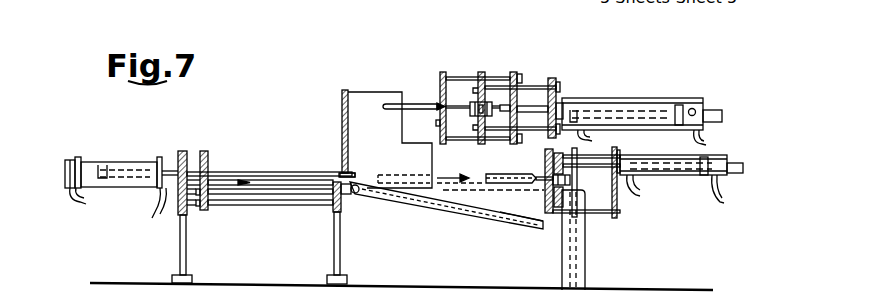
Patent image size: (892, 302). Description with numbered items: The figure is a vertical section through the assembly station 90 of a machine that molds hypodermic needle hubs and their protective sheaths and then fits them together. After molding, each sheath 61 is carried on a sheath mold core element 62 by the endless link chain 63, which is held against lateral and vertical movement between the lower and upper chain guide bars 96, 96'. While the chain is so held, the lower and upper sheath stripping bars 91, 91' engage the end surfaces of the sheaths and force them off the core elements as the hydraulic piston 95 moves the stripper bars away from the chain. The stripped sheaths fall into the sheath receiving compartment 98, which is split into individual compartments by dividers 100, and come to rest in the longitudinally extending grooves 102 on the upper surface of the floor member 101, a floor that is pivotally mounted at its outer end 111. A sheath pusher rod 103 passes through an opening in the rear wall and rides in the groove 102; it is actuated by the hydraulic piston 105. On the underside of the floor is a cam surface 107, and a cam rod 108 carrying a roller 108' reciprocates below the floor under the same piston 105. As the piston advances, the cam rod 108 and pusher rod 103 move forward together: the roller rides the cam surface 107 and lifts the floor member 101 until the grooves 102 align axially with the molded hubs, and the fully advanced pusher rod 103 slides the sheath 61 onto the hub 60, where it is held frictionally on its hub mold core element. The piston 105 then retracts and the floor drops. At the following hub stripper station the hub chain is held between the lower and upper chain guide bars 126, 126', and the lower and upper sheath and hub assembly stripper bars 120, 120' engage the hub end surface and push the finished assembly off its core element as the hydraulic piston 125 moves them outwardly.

The hub 60 is at (548, 177).
The hypodermic needle protective sheath 61 is at (412, 102).
The sheath mold core element 62 is at (446, 106).
The endless link chain 63 is at (474, 115).
The assembly station 90 is at (352, 88).
The lower sheath stripping bar 91 is at (422, 128).
The upper sheath stripping bar 91' is at (456, 86).
The hydraulic piston 95 is at (643, 105).
The lower chain guide bar 96 is at (479, 119).
The upper chain guide bar 96' is at (489, 85).
The sheath receiving compartment 98 is at (342, 97).
The divider 100 is at (373, 94).
The floor member 101 is at (415, 198).
The longitudinally extending groove 102 is at (475, 210).
The sheath pusher rod 103 is at (258, 168).
The hydraulic piston 105 is at (125, 162).
The cam surface 107 is at (498, 223).
The cam rod 108 is at (260, 218).
The roller 108' is at (360, 219).
The outer end of floor member 111 is at (335, 175).
The lower sheath and hub assembly stripper bar 120 is at (524, 181).
The upper sheath and hub assembly stripper bar 120' is at (544, 91).
The hydraulic piston 125 is at (673, 175).
The lower chain guide bar 126 is at (557, 238).
The upper chain guide bar 126' is at (594, 119).